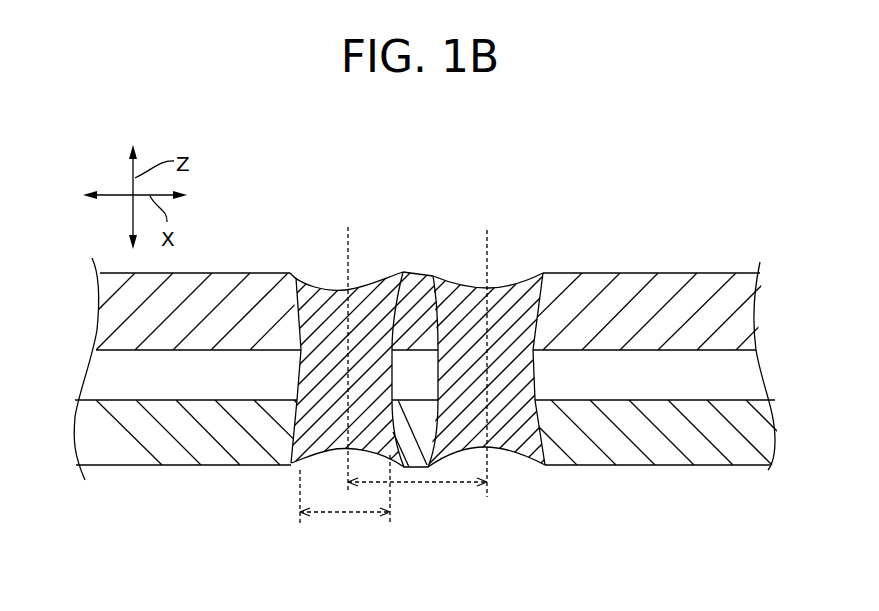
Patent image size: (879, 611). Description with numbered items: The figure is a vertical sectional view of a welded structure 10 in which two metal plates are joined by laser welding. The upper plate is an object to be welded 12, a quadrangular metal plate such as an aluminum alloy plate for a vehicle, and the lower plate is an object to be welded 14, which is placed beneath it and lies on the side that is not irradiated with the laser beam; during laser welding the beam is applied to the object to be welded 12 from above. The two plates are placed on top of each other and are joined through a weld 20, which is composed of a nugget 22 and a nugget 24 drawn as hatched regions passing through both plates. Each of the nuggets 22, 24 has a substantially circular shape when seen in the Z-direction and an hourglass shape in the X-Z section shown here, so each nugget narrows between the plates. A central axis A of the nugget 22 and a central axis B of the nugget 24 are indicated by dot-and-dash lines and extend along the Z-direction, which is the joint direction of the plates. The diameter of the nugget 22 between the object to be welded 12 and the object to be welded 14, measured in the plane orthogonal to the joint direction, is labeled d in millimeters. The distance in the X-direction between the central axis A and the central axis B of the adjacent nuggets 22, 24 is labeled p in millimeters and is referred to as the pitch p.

The welded structure 10 is at (634, 234).
The object to be welded 12 is at (703, 272).
The object to be welded 14 is at (683, 468).
The weld 20 is at (515, 257).
The nugget 22 is at (315, 283).
The nugget 24 is at (462, 283).
The central axis A is at (350, 257).
The central axis B is at (488, 258).
The diameter d is at (345, 516).
The pitch p is at (426, 485).